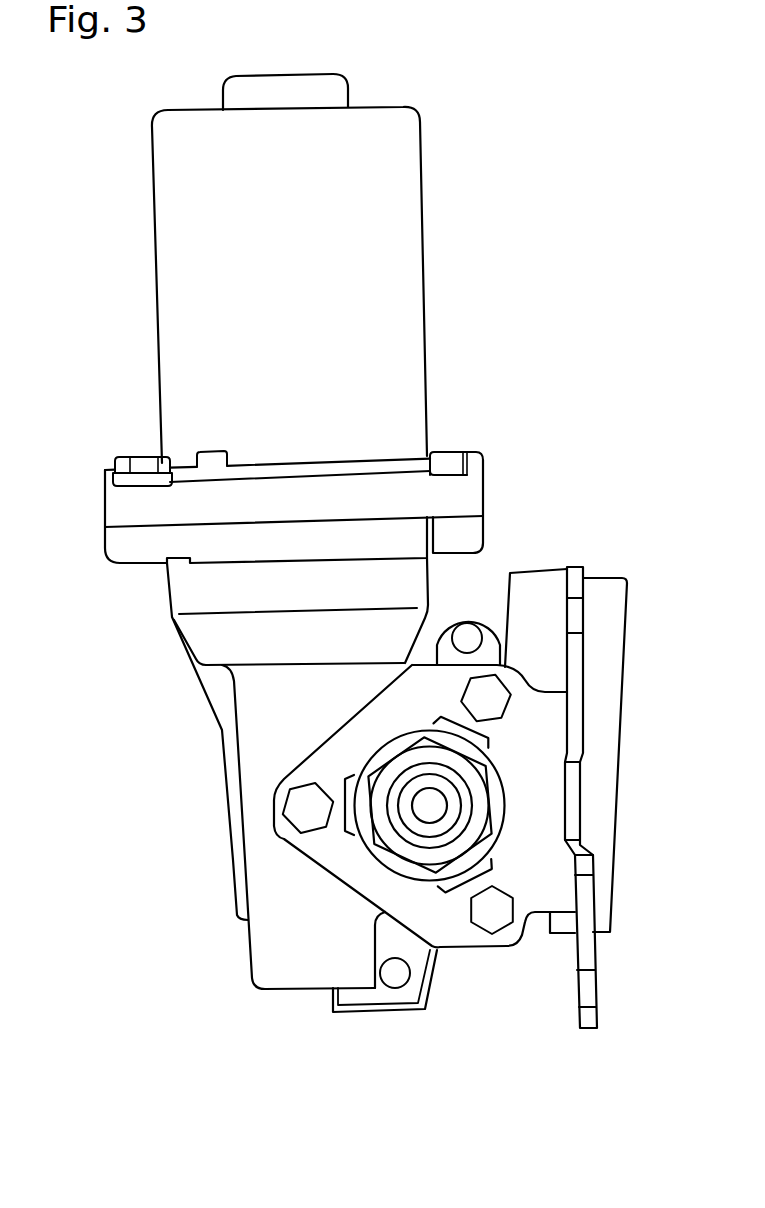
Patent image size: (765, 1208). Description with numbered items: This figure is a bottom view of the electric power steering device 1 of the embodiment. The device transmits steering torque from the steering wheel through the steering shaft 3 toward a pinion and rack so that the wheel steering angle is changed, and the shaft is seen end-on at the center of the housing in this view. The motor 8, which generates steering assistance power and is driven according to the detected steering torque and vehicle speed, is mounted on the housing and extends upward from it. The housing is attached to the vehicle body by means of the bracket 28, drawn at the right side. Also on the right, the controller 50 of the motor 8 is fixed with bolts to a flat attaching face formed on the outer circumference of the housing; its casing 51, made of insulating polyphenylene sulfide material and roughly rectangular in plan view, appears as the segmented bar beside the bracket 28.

The electric power steering device 1 is at (210, 750).
The steering shaft 3 is at (452, 810).
The motor 8 is at (390, 282).
The bracket 28 is at (578, 720).
The controller 50 is at (638, 601).
The casing 51 is at (601, 592).